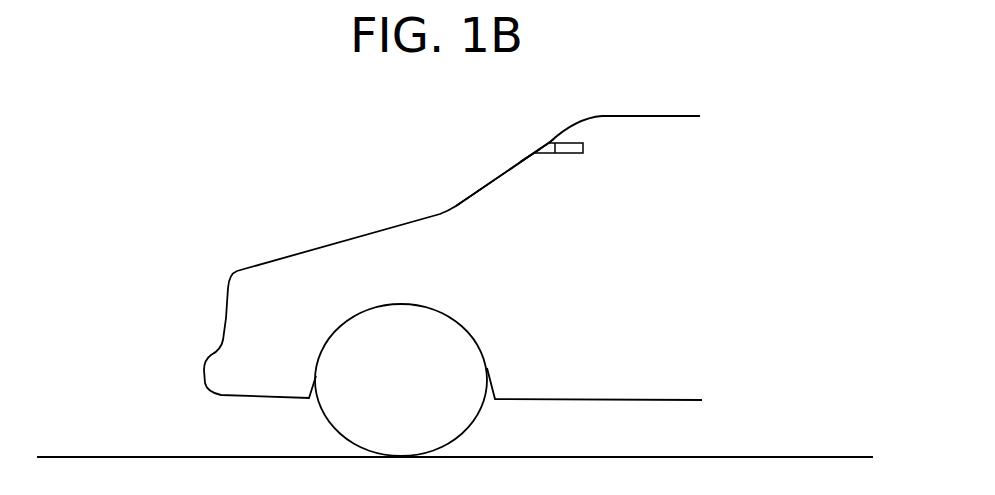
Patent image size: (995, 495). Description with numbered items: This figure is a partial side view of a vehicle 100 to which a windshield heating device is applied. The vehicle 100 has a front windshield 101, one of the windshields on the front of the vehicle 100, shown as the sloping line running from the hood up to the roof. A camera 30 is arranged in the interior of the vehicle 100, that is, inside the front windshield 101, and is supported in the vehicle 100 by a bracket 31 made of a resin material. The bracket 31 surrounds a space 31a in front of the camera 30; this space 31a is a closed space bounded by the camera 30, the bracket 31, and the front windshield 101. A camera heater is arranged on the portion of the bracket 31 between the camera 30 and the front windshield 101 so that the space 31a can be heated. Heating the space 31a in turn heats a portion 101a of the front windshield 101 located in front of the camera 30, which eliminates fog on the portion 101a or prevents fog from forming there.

The vehicle 100 is at (140, 308).
The front windshield 101 is at (500, 173).
The portion of the front windshield 101a is at (535, 131).
The camera 30 is at (583, 148).
The bracket 31 is at (552, 154).
The space 31a is at (550, 141).